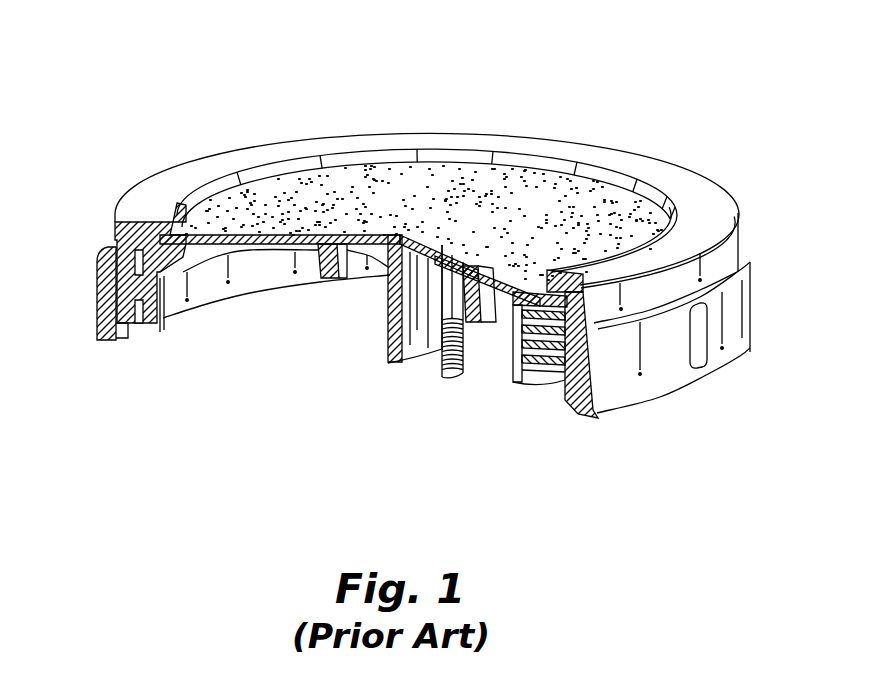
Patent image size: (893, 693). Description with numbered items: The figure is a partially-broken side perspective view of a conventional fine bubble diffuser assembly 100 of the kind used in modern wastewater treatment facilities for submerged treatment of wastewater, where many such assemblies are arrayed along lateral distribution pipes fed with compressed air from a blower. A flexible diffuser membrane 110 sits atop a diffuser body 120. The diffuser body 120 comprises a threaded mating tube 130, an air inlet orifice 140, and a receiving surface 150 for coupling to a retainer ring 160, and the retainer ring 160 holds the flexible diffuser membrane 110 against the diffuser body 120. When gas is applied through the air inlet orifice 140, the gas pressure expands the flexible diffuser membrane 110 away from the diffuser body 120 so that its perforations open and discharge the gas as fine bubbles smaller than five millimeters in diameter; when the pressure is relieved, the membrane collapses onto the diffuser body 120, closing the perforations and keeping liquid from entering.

The fine bubble diffuser assembly 100 is at (179, 131).
The flexible diffuser membrane 110 is at (270, 197).
The diffuser body 120 is at (293, 309).
The threaded mating tube 130 is at (462, 375).
The air inlet orifice 140 is at (419, 363).
The receiving surface 150 is at (560, 372).
The retainer ring 160 is at (146, 205).